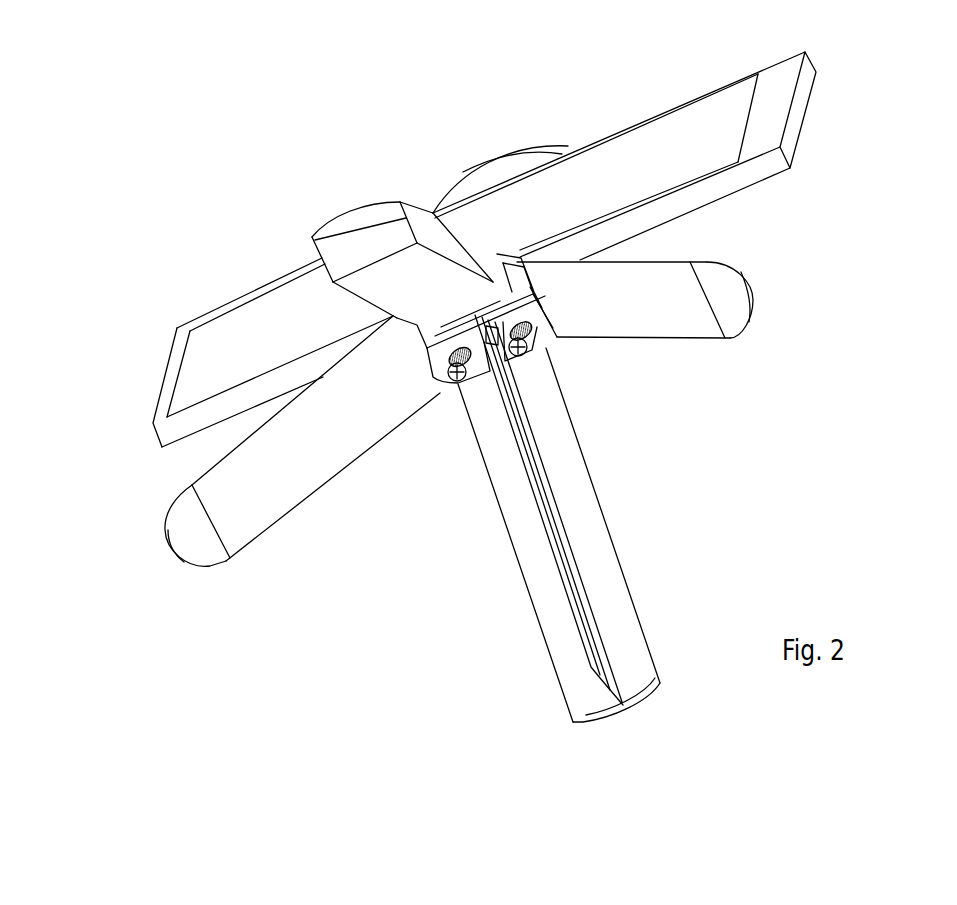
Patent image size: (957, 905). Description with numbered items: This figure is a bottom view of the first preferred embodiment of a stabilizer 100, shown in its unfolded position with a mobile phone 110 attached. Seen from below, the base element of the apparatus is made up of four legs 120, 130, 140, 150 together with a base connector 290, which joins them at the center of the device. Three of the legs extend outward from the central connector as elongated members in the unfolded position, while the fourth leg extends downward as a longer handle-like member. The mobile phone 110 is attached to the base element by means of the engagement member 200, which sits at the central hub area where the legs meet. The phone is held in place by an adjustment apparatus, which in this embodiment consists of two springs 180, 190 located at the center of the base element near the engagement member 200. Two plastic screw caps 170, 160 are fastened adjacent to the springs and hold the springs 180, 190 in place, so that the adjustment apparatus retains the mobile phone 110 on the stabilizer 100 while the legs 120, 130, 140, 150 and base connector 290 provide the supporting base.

The stabilizer 100 is at (537, 368).
The mobile phone 110 is at (661, 142).
The leg 120 is at (537, 577).
The leg 130 is at (240, 525).
The leg 140 is at (352, 260).
The leg 150 is at (690, 325).
The plastic screw cap 160 is at (547, 350).
The plastic screw cap 170 is at (457, 384).
The spring 180 is at (453, 353).
The spring 190 is at (515, 312).
The engagement member 200 is at (480, 162).
The base connector 290 is at (516, 256).